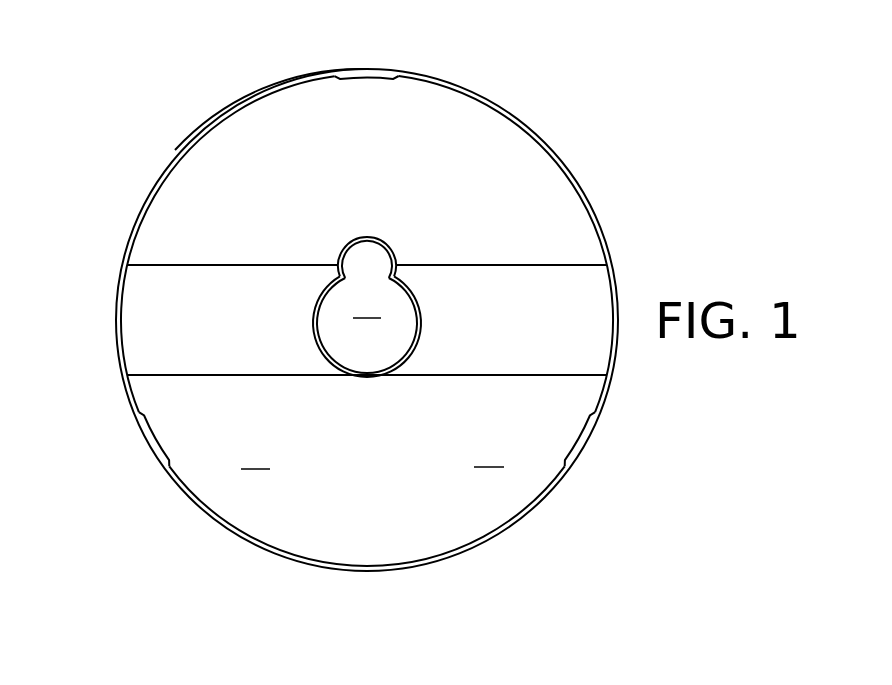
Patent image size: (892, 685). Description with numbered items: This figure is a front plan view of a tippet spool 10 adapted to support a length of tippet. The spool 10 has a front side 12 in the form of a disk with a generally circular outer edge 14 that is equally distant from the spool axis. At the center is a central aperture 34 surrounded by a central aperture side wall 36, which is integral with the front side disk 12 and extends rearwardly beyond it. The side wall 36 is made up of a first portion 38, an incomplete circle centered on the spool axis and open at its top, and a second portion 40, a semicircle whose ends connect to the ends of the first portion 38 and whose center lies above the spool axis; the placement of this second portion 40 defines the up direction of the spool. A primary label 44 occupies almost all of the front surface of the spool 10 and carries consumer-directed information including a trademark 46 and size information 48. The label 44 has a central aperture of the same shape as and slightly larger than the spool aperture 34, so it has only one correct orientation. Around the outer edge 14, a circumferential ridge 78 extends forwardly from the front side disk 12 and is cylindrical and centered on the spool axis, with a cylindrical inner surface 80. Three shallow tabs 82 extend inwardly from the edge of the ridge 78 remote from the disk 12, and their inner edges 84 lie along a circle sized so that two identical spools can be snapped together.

The tippet spool 10 is at (135, 472).
The front side 12 is at (255, 457).
The circular outer edge 14 is at (118, 267).
The central aperture 34 is at (367, 306).
The central aperture side wall 36 is at (320, 319).
The first portion 38 is at (423, 326).
The second portion 40 is at (371, 238).
The primary label 44 is at (489, 455).
The trademark 46 is at (457, 147).
The size information 48 is at (318, 480).
The circumferential ridge 78 is at (175, 150).
The cylindrical inner surface 80 is at (143, 213).
The shallow tabs 82 is at (372, 77).
The inner edges 84 is at (353, 74).